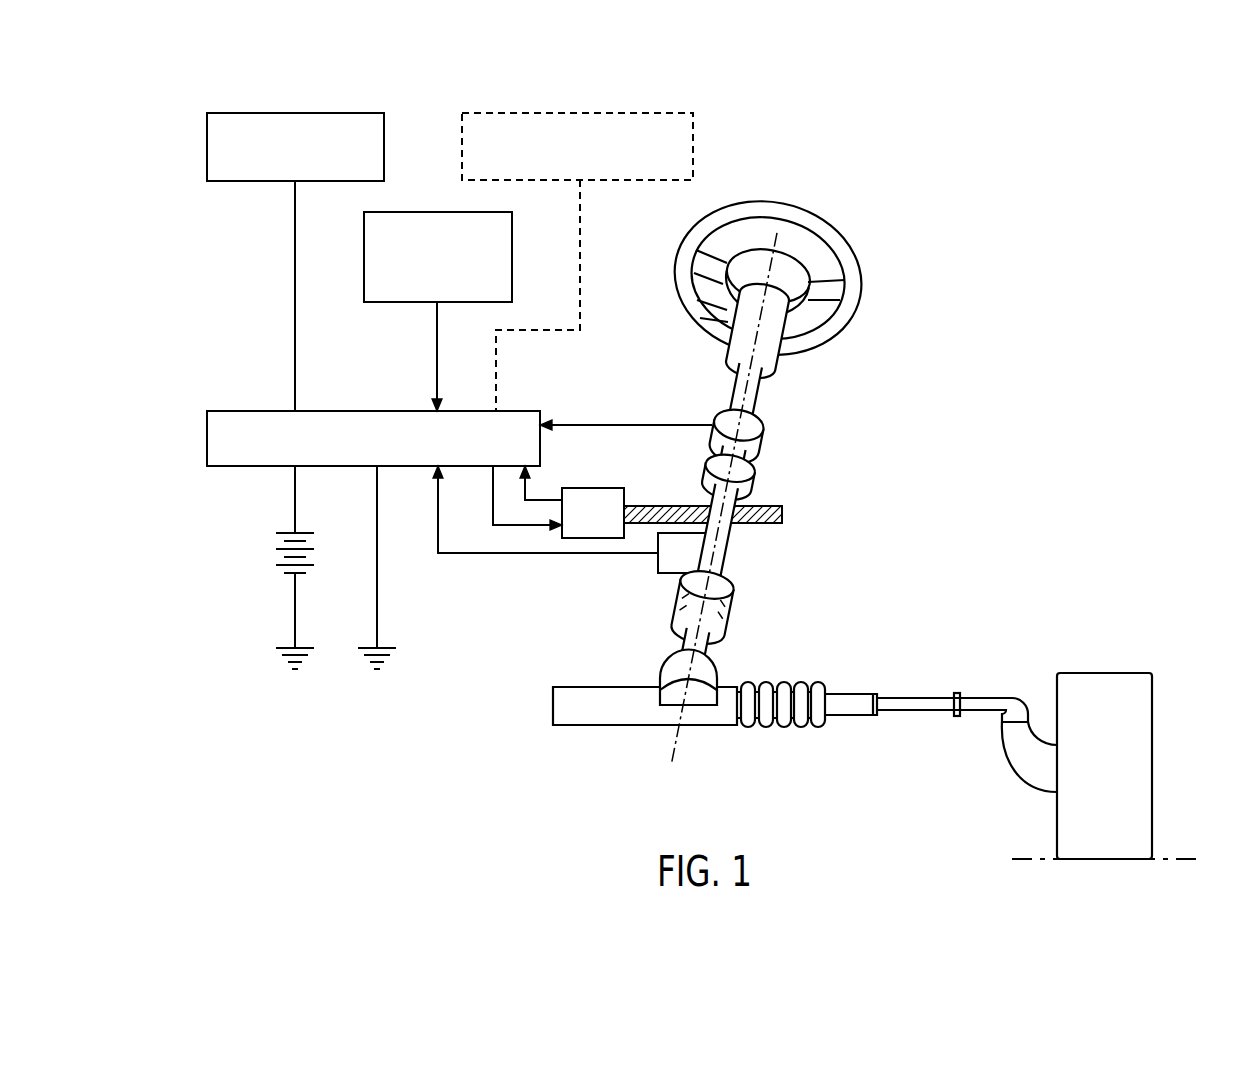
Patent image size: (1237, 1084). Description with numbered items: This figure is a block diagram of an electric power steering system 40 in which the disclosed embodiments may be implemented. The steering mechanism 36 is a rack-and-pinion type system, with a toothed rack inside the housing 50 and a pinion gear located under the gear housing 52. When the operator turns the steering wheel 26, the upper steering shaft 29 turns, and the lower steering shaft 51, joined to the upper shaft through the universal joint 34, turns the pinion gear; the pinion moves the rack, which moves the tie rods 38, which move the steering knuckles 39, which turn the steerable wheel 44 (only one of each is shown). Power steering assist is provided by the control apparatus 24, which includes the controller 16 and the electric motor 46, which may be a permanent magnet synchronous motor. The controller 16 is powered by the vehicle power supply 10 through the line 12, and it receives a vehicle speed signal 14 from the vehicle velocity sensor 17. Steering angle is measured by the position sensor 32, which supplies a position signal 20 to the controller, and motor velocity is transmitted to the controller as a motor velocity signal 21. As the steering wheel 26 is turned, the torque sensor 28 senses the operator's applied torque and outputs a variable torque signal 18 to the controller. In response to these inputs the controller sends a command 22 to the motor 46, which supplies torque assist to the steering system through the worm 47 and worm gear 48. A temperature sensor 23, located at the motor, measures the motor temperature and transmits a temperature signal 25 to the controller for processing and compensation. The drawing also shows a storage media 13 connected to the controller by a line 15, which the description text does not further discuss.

The vehicle power supply 10 is at (283, 557).
The line 12 is at (293, 490).
The storage media 13 is at (241, 183).
The vehicle speed signal 14 is at (437, 318).
The storage media connection line 15 is at (294, 272).
The controller 16 is at (358, 410).
The vehicle velocity sensor 17 is at (437, 212).
The variable torque signal 18 is at (636, 422).
The position signal 20 is at (553, 556).
The motor velocity signal 21 is at (546, 498).
The command 22 is at (513, 528).
The temperature sensor 23 is at (696, 165).
The control apparatus 24 is at (942, 414).
The temperature signal 25 is at (582, 243).
The steering wheel 26 is at (818, 232).
The torque sensor 28 is at (763, 428).
The upper steering shaft 29 is at (731, 393).
The position sensor 32 is at (657, 566).
The universal joint 34 is at (727, 602).
The steering mechanism 36 is at (806, 681).
The tie rods 38 is at (913, 710).
The steering knuckles 39 is at (1026, 753).
The electric power steering system 40 is at (1017, 507).
The steerable wheel 44 is at (1092, 688).
The motor 46 is at (606, 487).
The worm 47 is at (775, 517).
The worm gear 48 is at (747, 482).
The housing 50 is at (589, 720).
The lower steering shaft 51 is at (702, 650).
The gear housing 52 is at (663, 668).